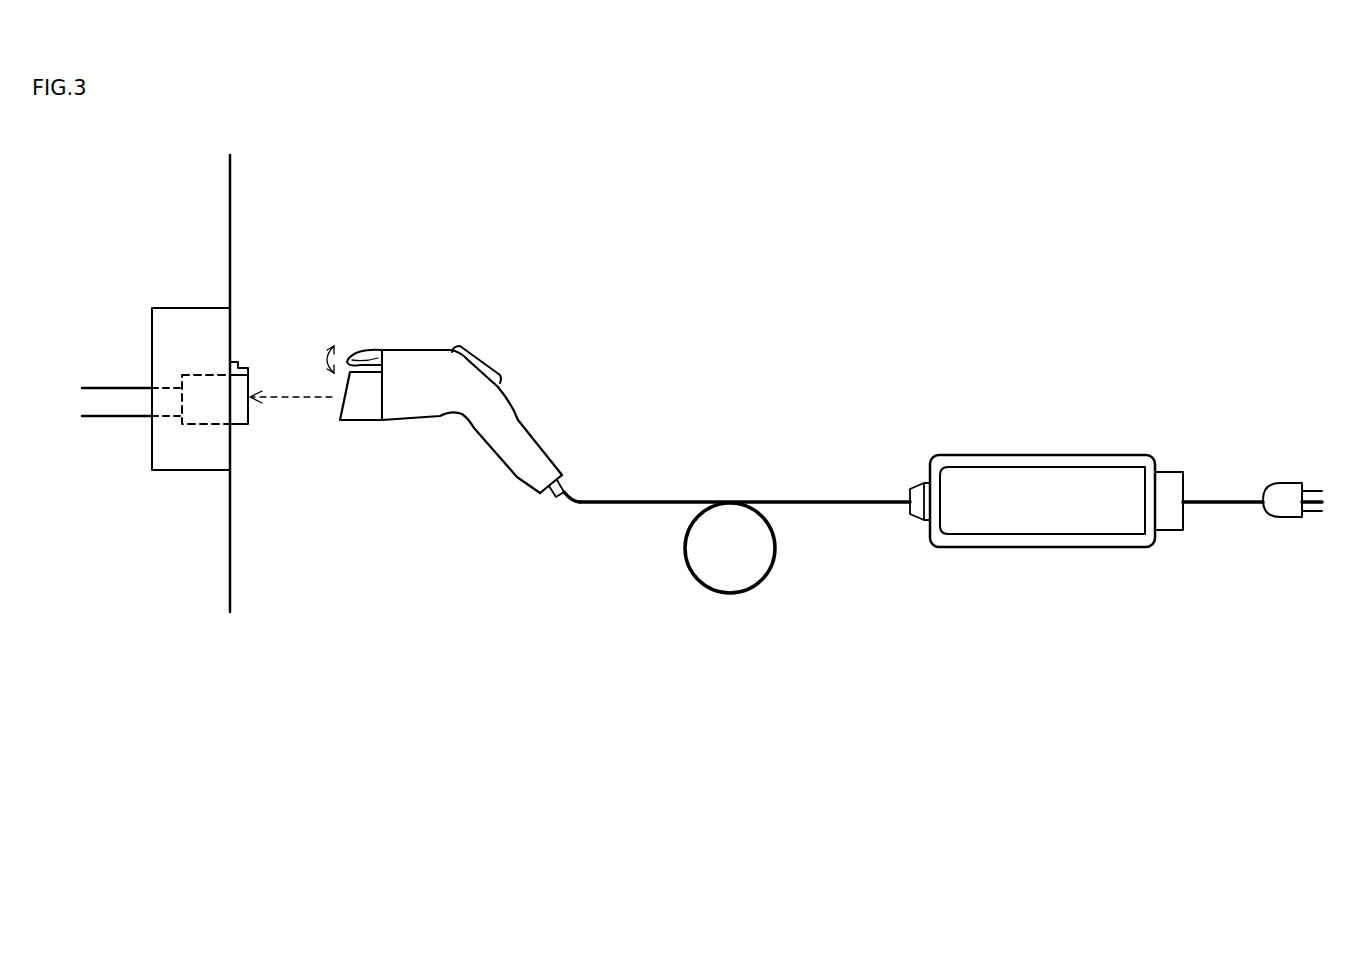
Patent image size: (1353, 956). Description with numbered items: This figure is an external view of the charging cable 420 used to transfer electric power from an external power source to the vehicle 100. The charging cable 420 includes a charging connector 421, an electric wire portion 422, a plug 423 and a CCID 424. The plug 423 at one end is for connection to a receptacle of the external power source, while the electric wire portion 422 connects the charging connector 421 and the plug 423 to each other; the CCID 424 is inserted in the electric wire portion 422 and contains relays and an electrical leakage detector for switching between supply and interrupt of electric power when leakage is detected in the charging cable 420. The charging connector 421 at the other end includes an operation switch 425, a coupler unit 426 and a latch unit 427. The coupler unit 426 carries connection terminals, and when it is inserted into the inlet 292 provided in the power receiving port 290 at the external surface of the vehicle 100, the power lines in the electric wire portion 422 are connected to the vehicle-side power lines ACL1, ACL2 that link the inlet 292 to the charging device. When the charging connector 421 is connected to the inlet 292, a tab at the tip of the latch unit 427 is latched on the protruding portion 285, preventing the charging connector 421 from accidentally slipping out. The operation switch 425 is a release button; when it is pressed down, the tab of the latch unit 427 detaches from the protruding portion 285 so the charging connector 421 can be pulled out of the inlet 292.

The vehicle 100 is at (118, 184).
The power receiving port 290 is at (178, 470).
The inlet 292 is at (205, 375).
The protruding portion 285 is at (245, 362).
The power line ACL1 is at (111, 388).
The power line ACL2 is at (107, 416).
The charging cable 420 is at (1144, 344).
The charging connector 421 is at (531, 427).
The electric wire portion 422 is at (817, 505).
The plug 423 is at (1285, 483).
The charging circuit interrupt device (CCID) 424 is at (1052, 453).
The operation switch 425 is at (482, 352).
The coupler unit 426 is at (360, 421).
The latch unit 427 is at (362, 349).